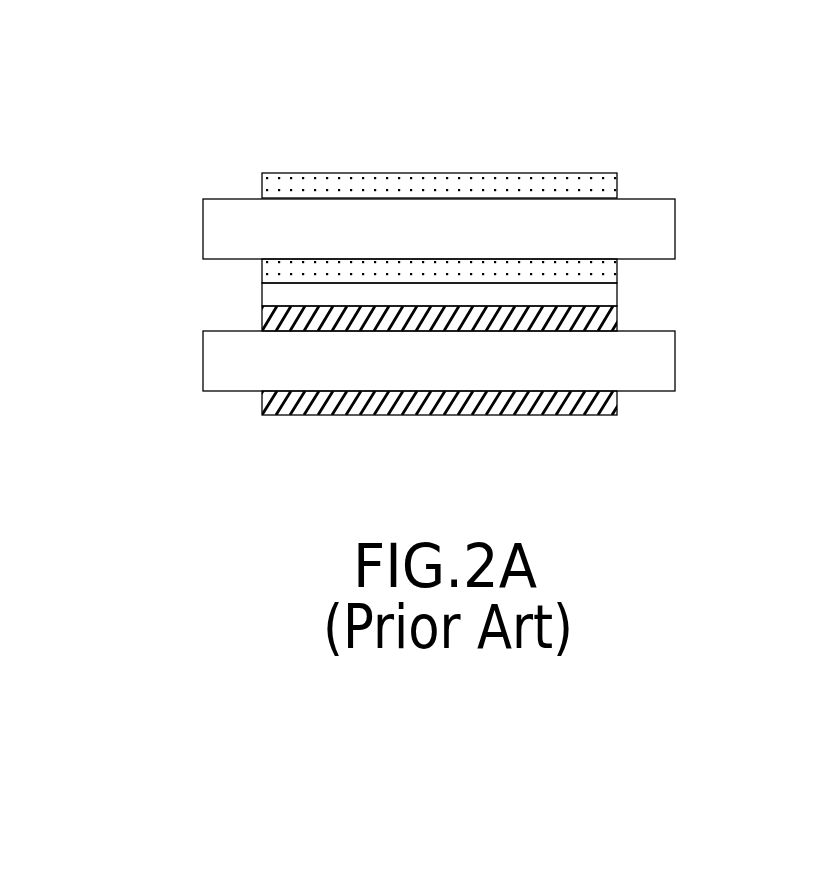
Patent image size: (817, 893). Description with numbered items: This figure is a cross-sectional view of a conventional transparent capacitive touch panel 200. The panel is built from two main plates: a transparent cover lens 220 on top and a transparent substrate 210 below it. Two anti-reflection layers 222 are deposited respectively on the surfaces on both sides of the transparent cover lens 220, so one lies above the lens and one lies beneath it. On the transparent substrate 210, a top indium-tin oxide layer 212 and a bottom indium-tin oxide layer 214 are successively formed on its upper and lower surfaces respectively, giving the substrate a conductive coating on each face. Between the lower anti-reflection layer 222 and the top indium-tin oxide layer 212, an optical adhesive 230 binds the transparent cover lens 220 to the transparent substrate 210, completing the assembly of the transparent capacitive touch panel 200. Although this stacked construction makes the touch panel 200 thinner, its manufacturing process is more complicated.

The transparent capacitive touch panel 200 is at (690, 550).
The transparent substrate 210 is at (650, 370).
The top indium-tin oxide layer 212 is at (603, 320).
The bottom indium-tin oxide layer 214 is at (603, 398).
The transparent cover lens 220 is at (650, 230).
The anti-reflection layer 222 is at (603, 191).
The optical adhesive 230 is at (278, 296).